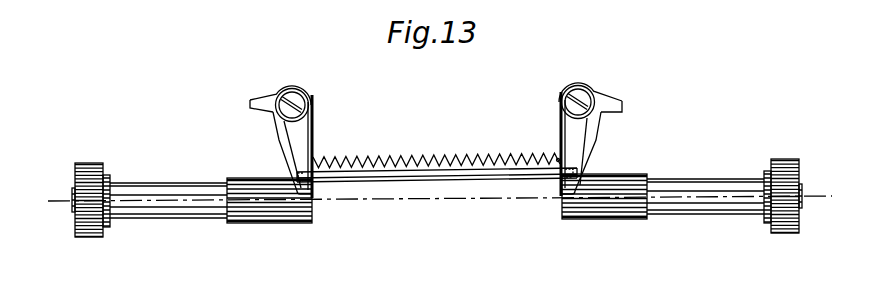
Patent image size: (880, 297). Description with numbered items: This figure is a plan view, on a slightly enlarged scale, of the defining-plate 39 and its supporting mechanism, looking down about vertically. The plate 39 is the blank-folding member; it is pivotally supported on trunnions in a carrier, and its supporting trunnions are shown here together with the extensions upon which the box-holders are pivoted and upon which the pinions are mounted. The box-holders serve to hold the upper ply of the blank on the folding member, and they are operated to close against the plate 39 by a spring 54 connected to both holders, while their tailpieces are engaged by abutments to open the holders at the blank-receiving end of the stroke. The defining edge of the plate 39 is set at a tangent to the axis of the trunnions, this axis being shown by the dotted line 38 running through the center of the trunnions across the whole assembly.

The dotted line 38 is at (383, 201).
The defining-plate 39 is at (445, 176).
The spring 54 is at (392, 156).